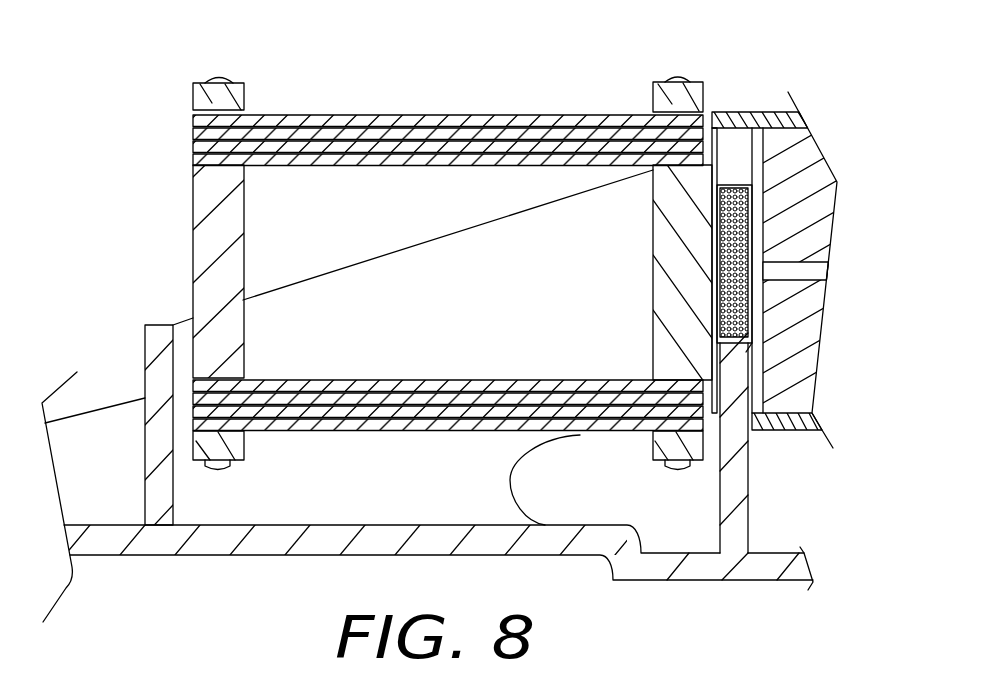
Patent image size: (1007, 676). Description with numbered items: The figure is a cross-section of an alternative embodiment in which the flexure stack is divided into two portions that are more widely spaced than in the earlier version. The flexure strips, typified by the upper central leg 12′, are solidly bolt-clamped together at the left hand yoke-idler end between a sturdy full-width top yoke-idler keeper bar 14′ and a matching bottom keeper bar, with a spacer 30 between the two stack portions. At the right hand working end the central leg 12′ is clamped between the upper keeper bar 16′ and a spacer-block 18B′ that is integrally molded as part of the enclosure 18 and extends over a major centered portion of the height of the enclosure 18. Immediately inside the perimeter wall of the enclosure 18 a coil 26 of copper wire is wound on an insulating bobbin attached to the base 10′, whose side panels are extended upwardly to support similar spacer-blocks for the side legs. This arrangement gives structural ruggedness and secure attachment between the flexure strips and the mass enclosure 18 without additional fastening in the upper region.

The base 10′ is at (476, 340).
The central leg 12′ is at (443, 117).
The top yoke-idler keeper bar 14′ is at (215, 97).
The upper keeper bar 16′ is at (680, 97).
The enclosure 18 is at (760, 128).
The spacer-block 18B′ is at (670, 296).
The coil 26 is at (736, 188).
The spacer 30 is at (193, 272).